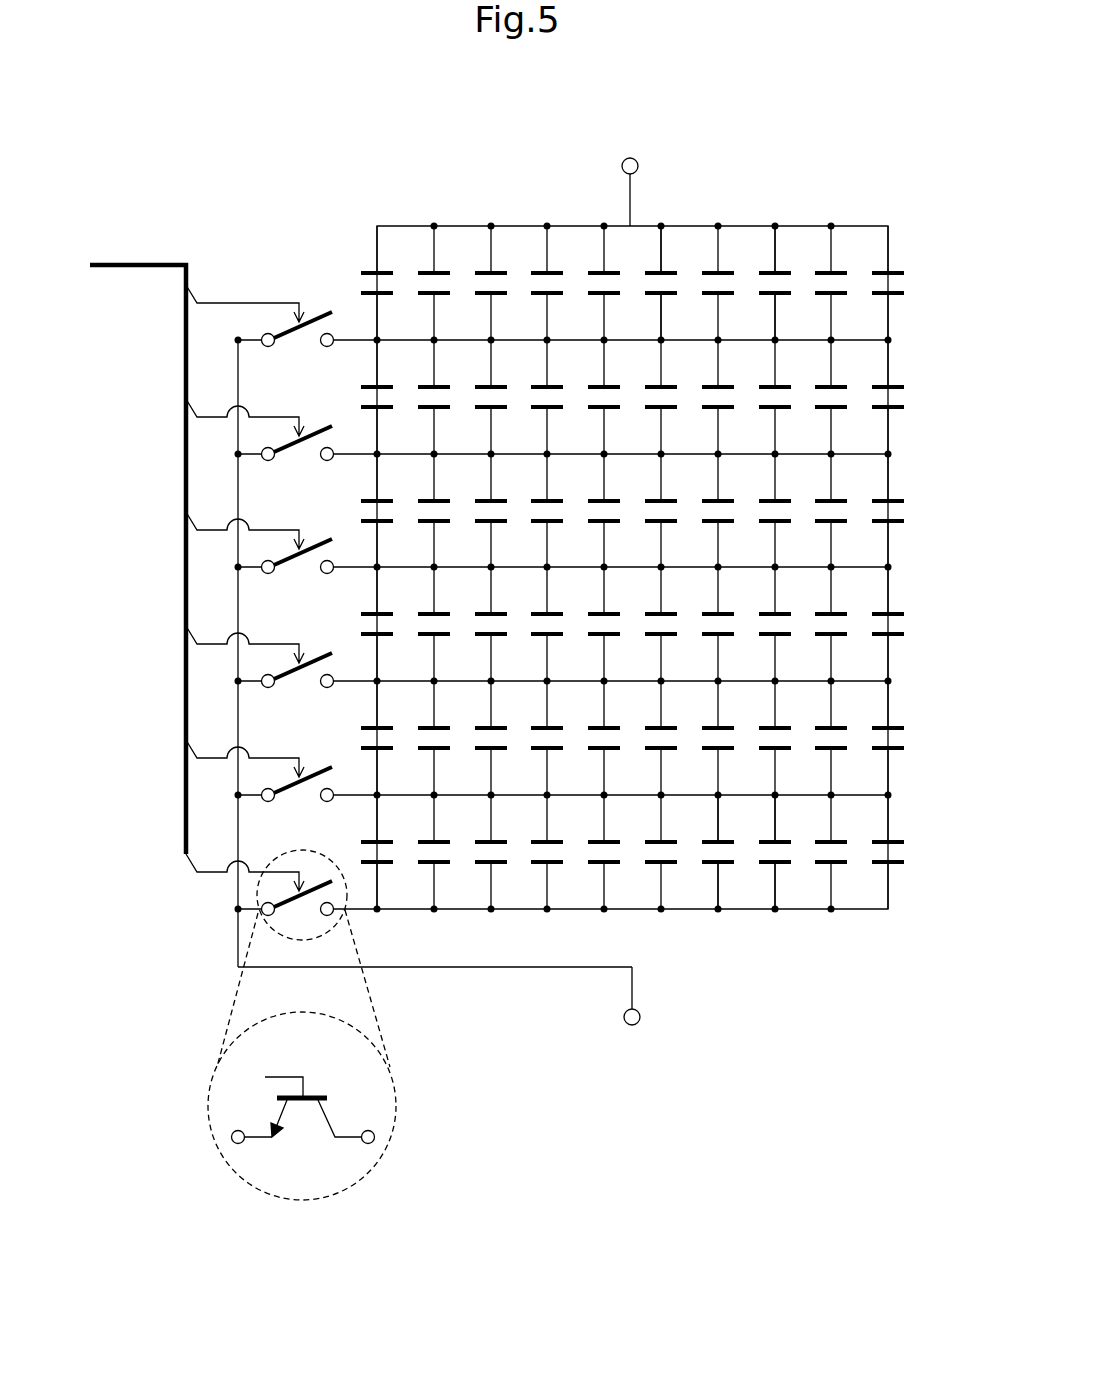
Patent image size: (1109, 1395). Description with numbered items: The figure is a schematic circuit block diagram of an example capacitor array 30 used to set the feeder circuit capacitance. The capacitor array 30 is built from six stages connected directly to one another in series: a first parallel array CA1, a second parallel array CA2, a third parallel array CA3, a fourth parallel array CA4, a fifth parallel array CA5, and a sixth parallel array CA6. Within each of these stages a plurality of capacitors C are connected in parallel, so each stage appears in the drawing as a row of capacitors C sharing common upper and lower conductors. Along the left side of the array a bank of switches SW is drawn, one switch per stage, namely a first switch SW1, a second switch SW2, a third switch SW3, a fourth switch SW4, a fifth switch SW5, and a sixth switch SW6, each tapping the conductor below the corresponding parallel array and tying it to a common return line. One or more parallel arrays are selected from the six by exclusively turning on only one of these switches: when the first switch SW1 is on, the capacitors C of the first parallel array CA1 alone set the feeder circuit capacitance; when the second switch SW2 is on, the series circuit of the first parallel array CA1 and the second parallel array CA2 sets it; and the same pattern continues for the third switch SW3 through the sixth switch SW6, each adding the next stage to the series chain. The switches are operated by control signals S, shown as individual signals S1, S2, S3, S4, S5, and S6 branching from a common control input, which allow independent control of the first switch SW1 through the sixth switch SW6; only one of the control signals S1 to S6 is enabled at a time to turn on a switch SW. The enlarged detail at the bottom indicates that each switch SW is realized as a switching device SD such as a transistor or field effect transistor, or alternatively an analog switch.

The capacitor array 30 is at (610, 556).
The control signals S is at (185, 572).
The control signal S1 is at (245, 300).
The control signal S2 is at (245, 414).
The control signal S3 is at (245, 527).
The control signal S4 is at (245, 641).
The control signal S5 is at (245, 755).
The control signal S6 is at (245, 869).
The switch SW is at (320, 222).
The first switch SW1 is at (315, 318).
The second switch SW2 is at (315, 432).
The third switch SW3 is at (315, 545).
The fourth switch SW4 is at (315, 659).
The fifth switch SW5 is at (315, 773).
The sixth switch SW6 is at (315, 887).
The capacitor C is at (765, 272).
The first parallel array CA1 is at (924, 264).
The second parallel array CA2 is at (924, 378).
The third parallel array CA3 is at (924, 492).
The fourth parallel array CA4 is at (924, 606).
The fifth parallel array CA5 is at (924, 720).
The sixth parallel array CA6 is at (924, 834).
The switching device SD is at (331, 1149).